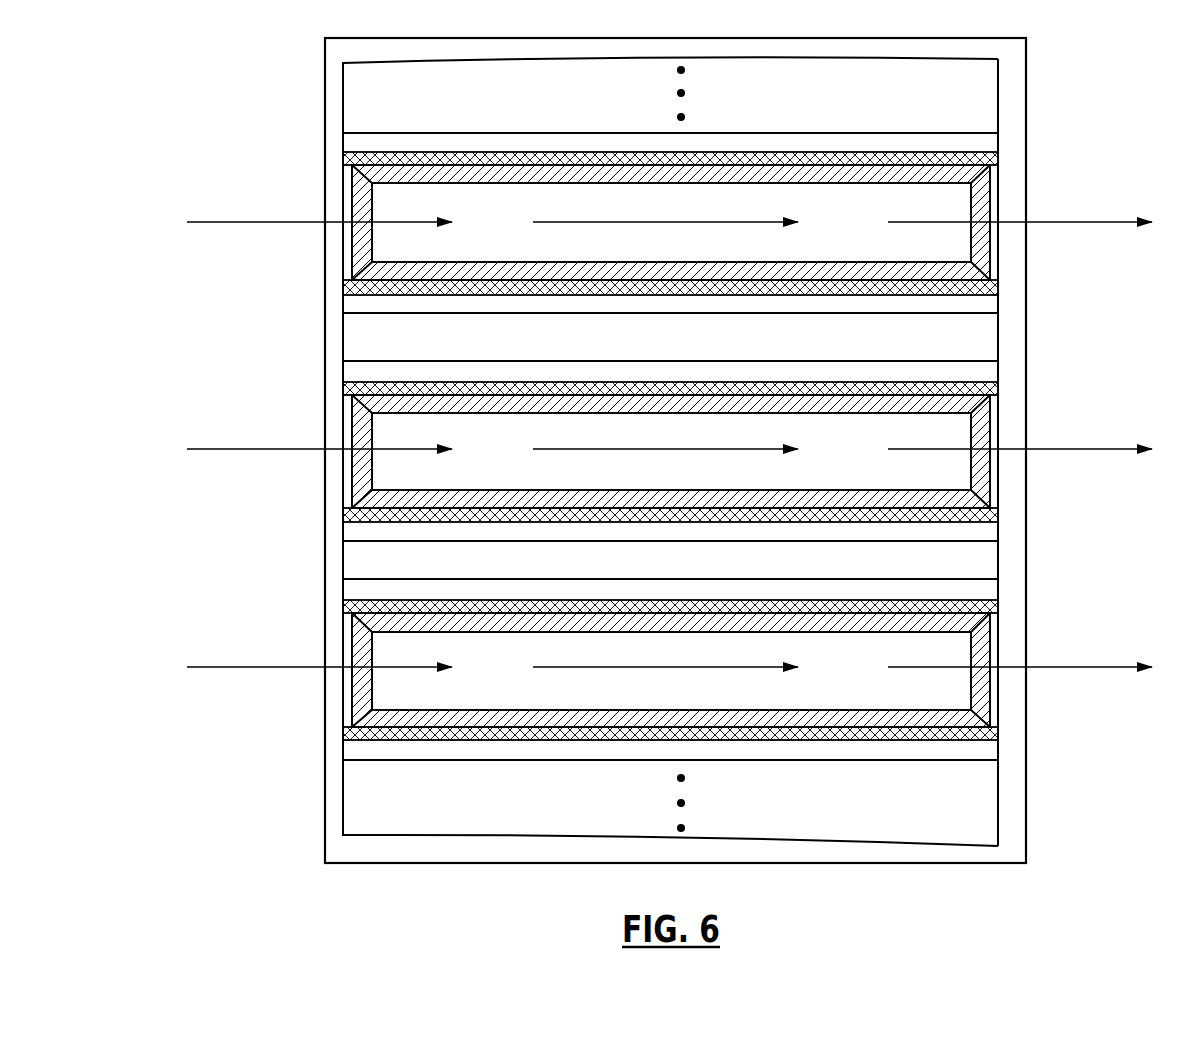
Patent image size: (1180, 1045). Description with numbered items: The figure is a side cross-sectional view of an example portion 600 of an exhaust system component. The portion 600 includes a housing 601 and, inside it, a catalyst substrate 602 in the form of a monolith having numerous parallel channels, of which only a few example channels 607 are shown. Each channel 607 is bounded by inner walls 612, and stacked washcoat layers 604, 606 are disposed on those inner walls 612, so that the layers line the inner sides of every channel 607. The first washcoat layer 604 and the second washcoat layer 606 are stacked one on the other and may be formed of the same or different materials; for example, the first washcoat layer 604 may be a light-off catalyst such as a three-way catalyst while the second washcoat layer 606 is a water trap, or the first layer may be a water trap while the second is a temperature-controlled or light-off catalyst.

The portion of an exhaust system component 600 is at (240, 72).
The housing 601 is at (326, 62).
The catalyst substrate 602 is at (1000, 113).
The first washcoat layer 604 is at (572, 160).
The second washcoat layer 606 is at (663, 178).
The channel 607 is at (373, 133).
The inner wall 612 is at (448, 157).